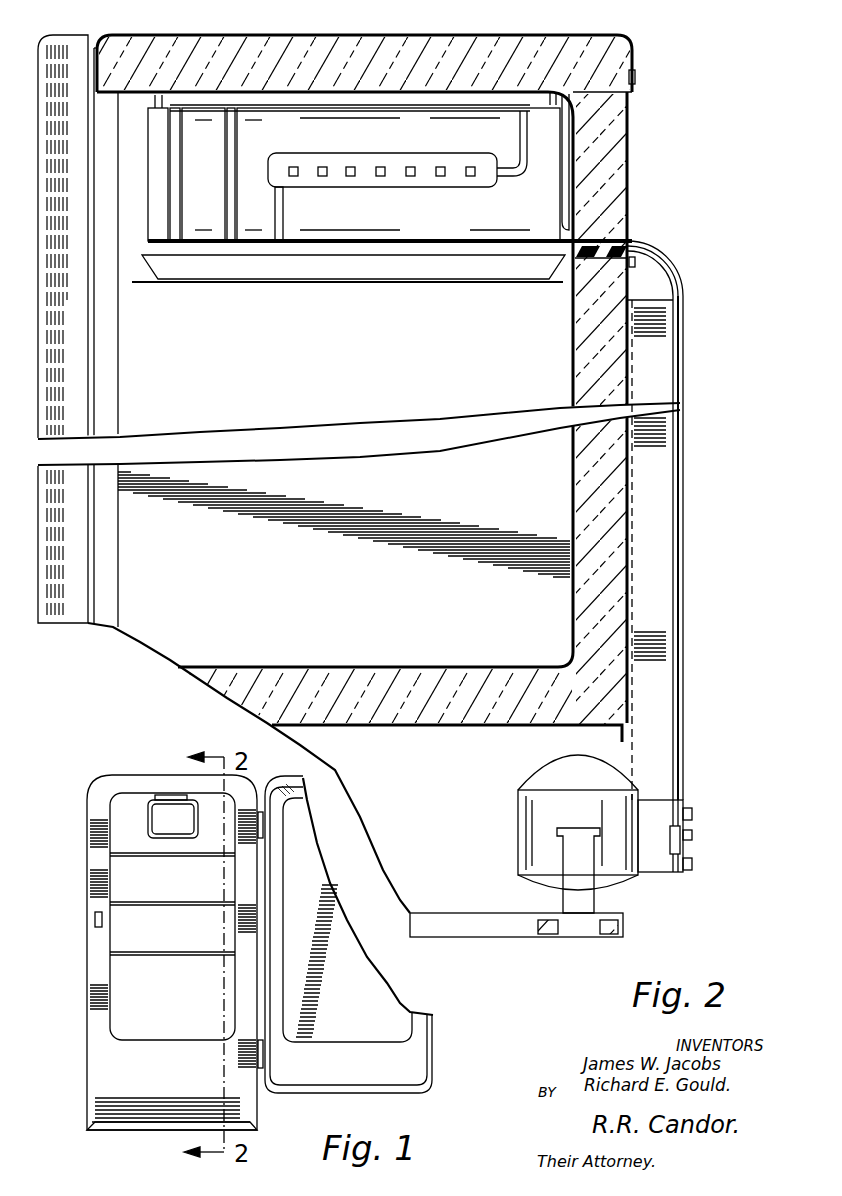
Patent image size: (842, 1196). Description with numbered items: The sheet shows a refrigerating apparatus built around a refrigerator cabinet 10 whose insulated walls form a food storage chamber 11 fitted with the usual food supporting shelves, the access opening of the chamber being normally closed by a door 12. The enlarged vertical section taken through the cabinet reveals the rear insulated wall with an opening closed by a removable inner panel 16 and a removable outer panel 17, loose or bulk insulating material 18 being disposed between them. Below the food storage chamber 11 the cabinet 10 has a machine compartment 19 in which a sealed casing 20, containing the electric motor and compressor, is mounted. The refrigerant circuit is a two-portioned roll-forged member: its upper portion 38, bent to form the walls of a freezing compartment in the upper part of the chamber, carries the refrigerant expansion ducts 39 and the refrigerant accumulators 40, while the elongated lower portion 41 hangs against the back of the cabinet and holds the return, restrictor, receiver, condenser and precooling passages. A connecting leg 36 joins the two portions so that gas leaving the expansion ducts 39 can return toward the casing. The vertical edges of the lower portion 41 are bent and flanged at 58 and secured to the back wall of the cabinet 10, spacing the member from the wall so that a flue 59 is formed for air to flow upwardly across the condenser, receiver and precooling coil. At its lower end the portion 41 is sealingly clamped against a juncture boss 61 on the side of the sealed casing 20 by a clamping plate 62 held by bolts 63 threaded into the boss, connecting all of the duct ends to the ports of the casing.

In FIG. 2, the refrigerator cabinet 10 is at (637, 43).
In FIG. 1, the refrigerator cabinet 10 is at (87, 822).
In FIG. 2, the food storage chamber 11 is at (364, 379).
In FIG. 1, the food storage chamber 11 is at (135, 935).
In FIG. 2, the door 12 is at (76, 402).
In FIG. 1, the door 12 is at (385, 1010).
In FIG. 2, the inner panel 16 is at (575, 178).
In FIG. 2, the outer panel 17 is at (636, 171).
In FIG. 2, the insulating material 18 is at (614, 198).
In FIG. 2, the machine compartment 19 is at (408, 820).
In FIG. 1, the machine compartment 19 is at (142, 1082).
In FIG. 2, the sealed casing 20 is at (536, 848).
In FIG. 2, the connecting leg 36 is at (676, 268).
In FIG. 2, the upper portion of the roll-forged member 38 is at (506, 228).
In FIG. 1, the upper portion of the roll-forged member 38 is at (148, 815).
In FIG. 2, the refrigerant expansion ducts 39 is at (233, 146).
In FIG. 2, the refrigerant accumulators 40 is at (365, 185).
In FIG. 2, the lower elongated portion of the roll-forged member 41 is at (683, 712).
In FIG. 2, the flanged edges 58 is at (632, 584).
In FIG. 2, the flue 59 is at (656, 478).
In FIG. 2, the juncture boss 61 is at (666, 858).
In FIG. 2, the clamping plate 62 is at (692, 846).
In FIG. 2, the bolts 63 is at (692, 864).